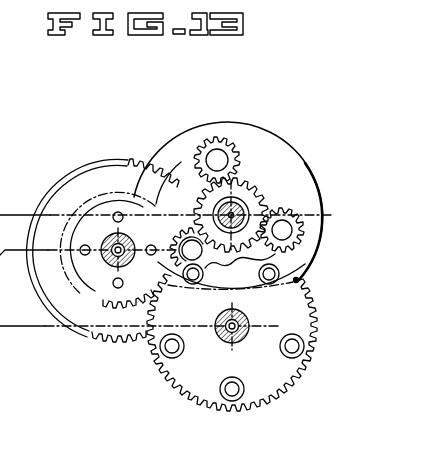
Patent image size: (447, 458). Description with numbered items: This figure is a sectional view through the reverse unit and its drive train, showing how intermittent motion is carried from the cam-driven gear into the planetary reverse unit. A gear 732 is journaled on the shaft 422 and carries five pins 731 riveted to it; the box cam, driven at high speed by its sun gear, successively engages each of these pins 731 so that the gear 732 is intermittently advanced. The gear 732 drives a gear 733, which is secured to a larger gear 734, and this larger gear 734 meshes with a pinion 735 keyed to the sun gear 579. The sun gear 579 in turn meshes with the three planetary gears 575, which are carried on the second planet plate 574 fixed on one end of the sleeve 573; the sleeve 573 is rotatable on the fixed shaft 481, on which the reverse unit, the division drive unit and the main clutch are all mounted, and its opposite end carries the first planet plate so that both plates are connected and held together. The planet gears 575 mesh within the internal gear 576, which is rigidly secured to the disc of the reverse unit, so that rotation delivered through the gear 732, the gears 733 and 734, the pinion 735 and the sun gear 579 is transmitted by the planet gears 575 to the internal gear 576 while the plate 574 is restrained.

The shaft 422 is at (245, 342).
The fixed shaft 481 is at (248, 211).
The sleeve 573 is at (303, 265).
The second planet plate 574 is at (249, 157).
The planet gears 575 is at (230, 177).
The internal gear 576 is at (188, 157).
The sun gear 579 is at (276, 212).
The pins 731 is at (296, 340).
The gear 732 is at (307, 299).
The gear 733 is at (101, 306).
The larger gear 734 is at (120, 342).
The pinion 735 is at (254, 187).